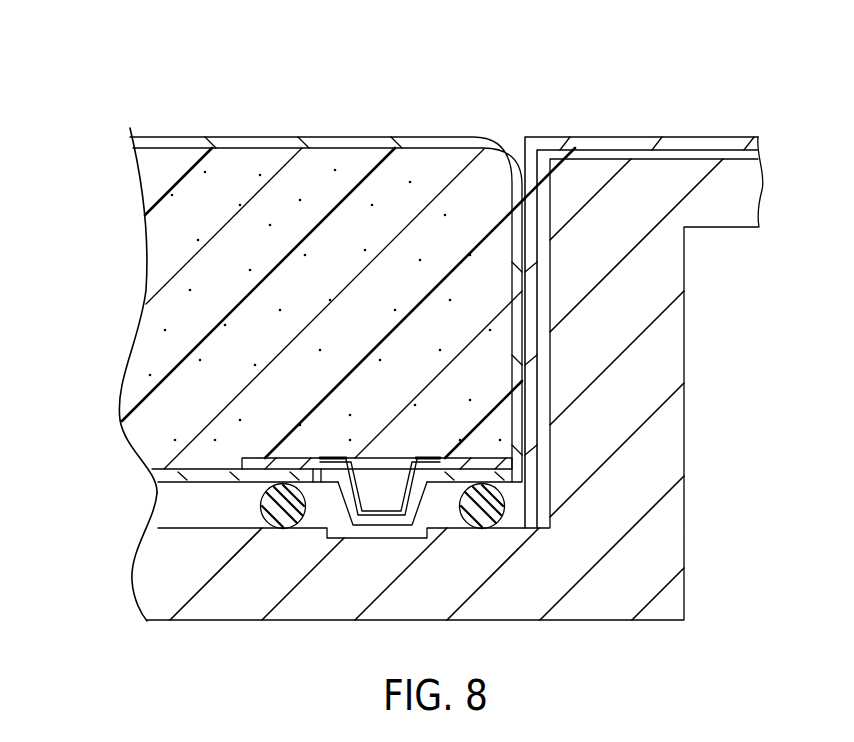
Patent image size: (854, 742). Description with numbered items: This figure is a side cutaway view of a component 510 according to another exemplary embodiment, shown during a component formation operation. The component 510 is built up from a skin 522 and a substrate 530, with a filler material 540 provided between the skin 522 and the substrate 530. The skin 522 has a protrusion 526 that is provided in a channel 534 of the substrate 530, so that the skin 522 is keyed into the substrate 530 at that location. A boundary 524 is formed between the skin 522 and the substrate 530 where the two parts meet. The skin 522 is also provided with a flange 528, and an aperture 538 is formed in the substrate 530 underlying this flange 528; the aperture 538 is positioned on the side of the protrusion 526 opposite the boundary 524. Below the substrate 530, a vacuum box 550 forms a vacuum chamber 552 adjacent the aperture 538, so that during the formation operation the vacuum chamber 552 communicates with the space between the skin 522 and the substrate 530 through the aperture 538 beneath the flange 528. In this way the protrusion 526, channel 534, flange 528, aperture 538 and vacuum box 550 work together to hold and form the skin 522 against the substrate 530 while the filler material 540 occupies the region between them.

The component 510 is at (90, 523).
The skin 522 is at (190, 136).
The boundary 524 is at (512, 142).
The protrusion 526 is at (371, 480).
The flange 528 is at (263, 457).
The substrate 530 is at (172, 468).
The channel 534 is at (397, 522).
The aperture 538 is at (317, 467).
The filler material 540 is at (175, 232).
The vacuum box 550 is at (290, 606).
The vacuum chamber 552 is at (192, 510).